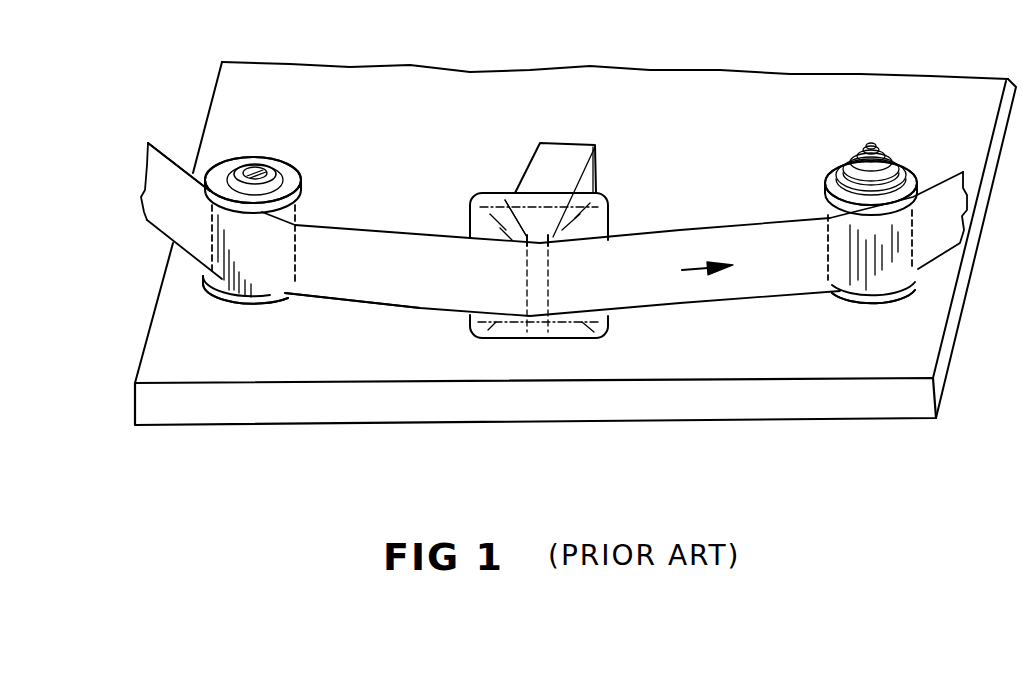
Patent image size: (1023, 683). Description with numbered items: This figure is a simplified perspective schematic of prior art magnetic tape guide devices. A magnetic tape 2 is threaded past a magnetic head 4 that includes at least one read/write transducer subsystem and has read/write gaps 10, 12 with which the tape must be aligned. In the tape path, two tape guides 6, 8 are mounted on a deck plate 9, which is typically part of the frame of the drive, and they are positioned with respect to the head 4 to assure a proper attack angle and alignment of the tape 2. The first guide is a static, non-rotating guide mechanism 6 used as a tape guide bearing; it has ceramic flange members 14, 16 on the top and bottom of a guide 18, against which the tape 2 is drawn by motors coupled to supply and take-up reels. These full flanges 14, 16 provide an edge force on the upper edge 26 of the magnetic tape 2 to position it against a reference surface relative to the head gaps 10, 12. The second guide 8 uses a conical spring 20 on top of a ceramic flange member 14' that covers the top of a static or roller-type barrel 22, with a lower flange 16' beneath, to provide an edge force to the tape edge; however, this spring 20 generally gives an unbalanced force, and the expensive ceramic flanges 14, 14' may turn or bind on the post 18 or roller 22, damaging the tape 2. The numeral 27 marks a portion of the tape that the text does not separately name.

The magnetic tape 2 is at (170, 177).
The magnetic head 4 is at (593, 229).
The tape guide 6 is at (300, 157).
The tape guide 8 is at (917, 153).
The deck plate 9 is at (942, 363).
The read/write gap 10 is at (508, 200).
The read/write gap 12 is at (592, 187).
The ceramic flange member 14 is at (253, 151).
The ceramic flange member 14' is at (840, 181).
The ceramic flange member 16 is at (235, 317).
The lower flange member 16' is at (872, 317).
The guide 18 is at (272, 252).
The conical spring 20 is at (857, 170).
The barrel 22 is at (900, 247).
The upper edge 26 is at (188, 160).
The tape surface 27 is at (323, 312).